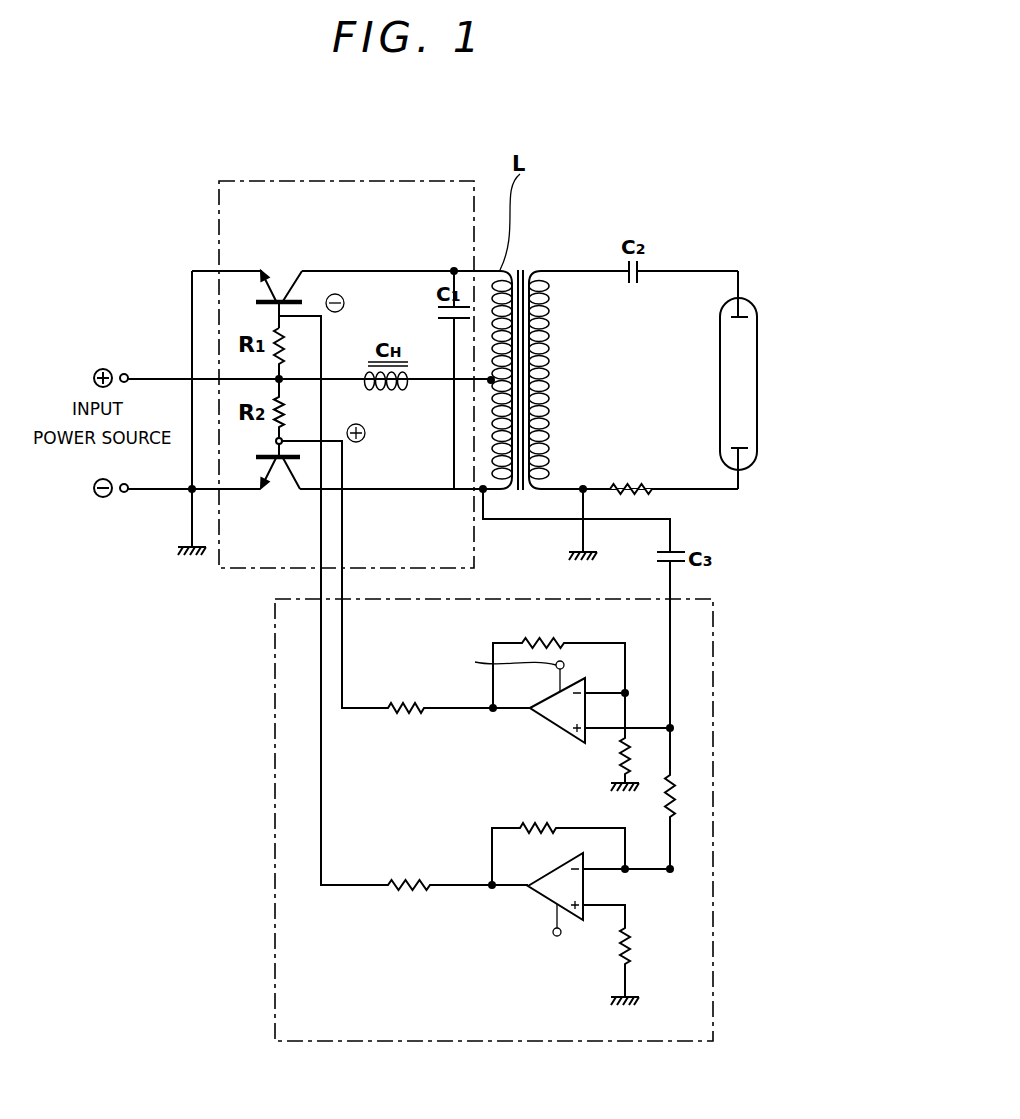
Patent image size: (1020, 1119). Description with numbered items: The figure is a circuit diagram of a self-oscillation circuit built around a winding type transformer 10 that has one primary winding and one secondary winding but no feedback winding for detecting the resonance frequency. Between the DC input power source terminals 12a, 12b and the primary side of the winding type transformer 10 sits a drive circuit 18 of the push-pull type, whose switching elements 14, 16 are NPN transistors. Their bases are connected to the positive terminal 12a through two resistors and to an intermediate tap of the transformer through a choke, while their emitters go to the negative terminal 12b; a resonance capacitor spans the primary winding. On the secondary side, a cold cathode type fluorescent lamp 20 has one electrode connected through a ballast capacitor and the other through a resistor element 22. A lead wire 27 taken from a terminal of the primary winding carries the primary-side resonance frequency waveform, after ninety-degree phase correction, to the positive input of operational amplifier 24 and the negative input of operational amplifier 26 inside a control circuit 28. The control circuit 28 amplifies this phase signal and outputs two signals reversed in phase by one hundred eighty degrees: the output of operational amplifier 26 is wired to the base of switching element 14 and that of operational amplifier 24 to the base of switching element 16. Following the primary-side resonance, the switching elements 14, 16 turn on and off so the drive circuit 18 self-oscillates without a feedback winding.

The winding type transformer 10 is at (528, 272).
The positive DC input power source terminal 12a is at (125, 373).
The negative DC input power source terminal 12b is at (122, 495).
The switching element 14 is at (268, 270).
The switching element 16 is at (270, 495).
The drive circuit 18 is at (305, 181).
The cold cathode type fluorescent lamp 20 is at (757, 410).
The resistor element 22 is at (630, 490).
The operational amplifier 24 is at (582, 677).
The operational amplifier 26 is at (532, 893).
The lead wire 27 is at (537, 519).
The control circuit 28 is at (441, 1082).